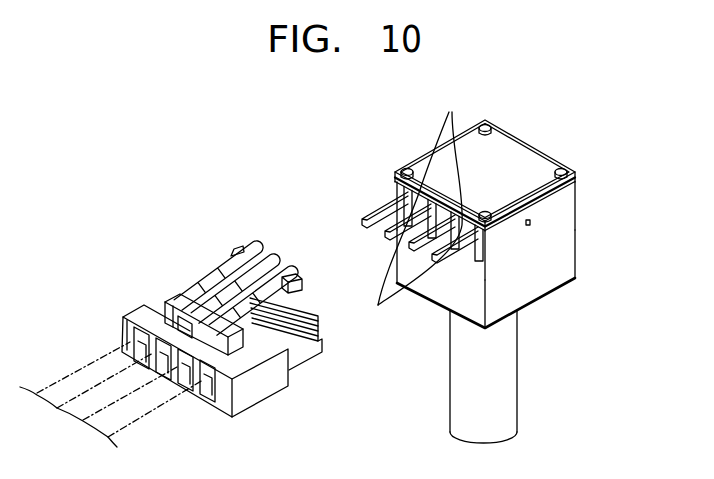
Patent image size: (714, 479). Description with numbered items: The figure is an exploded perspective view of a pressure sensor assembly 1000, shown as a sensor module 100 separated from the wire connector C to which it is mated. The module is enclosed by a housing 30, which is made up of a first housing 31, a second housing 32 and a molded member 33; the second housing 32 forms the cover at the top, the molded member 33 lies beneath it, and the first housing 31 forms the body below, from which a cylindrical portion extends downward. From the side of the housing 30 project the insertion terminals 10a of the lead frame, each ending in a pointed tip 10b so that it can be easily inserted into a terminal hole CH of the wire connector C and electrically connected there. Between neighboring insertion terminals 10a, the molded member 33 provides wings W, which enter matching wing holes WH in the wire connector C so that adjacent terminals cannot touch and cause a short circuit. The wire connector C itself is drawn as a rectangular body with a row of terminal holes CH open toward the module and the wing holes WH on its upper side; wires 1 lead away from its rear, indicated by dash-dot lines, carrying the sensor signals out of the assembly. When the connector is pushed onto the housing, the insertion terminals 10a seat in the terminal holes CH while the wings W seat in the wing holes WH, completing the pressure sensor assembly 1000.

The wires 1 is at (74, 372).
The connector module 100 is at (391, 135).
The pressure sensor assembly 1000 is at (561, 122).
The wings W is at (420, 199).
The insertion terminals 10a is at (398, 178).
The pointed tips 10b is at (366, 222).
The housing 30 is at (639, 150).
The first housing 31 is at (566, 258).
The second housing 32 is at (549, 169).
The molded member 33 is at (563, 202).
The wire connector C is at (262, 389).
The wing holes WH is at (299, 306).
The terminal holes CH is at (322, 332).